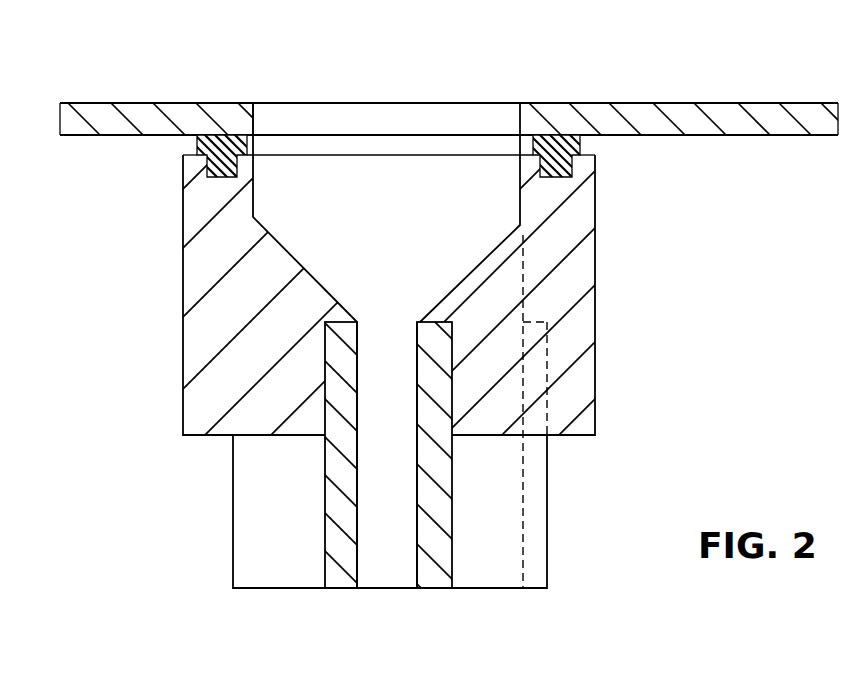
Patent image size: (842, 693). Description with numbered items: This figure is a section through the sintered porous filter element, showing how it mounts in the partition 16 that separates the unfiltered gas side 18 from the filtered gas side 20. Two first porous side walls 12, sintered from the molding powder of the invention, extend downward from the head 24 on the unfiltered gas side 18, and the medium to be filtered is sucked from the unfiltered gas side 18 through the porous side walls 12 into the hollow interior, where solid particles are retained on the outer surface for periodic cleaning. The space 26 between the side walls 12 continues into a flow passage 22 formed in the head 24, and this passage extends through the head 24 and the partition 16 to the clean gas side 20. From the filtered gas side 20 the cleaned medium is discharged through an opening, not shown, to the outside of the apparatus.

The first porous side wall 12 is at (293, 557).
The partition 16 is at (681, 117).
The unfiltered gas side 18 is at (774, 193).
The filtered gas side 20 is at (788, 57).
The flow passage 22 is at (420, 187).
The head 24 is at (610, 321).
The space 26 is at (404, 499).